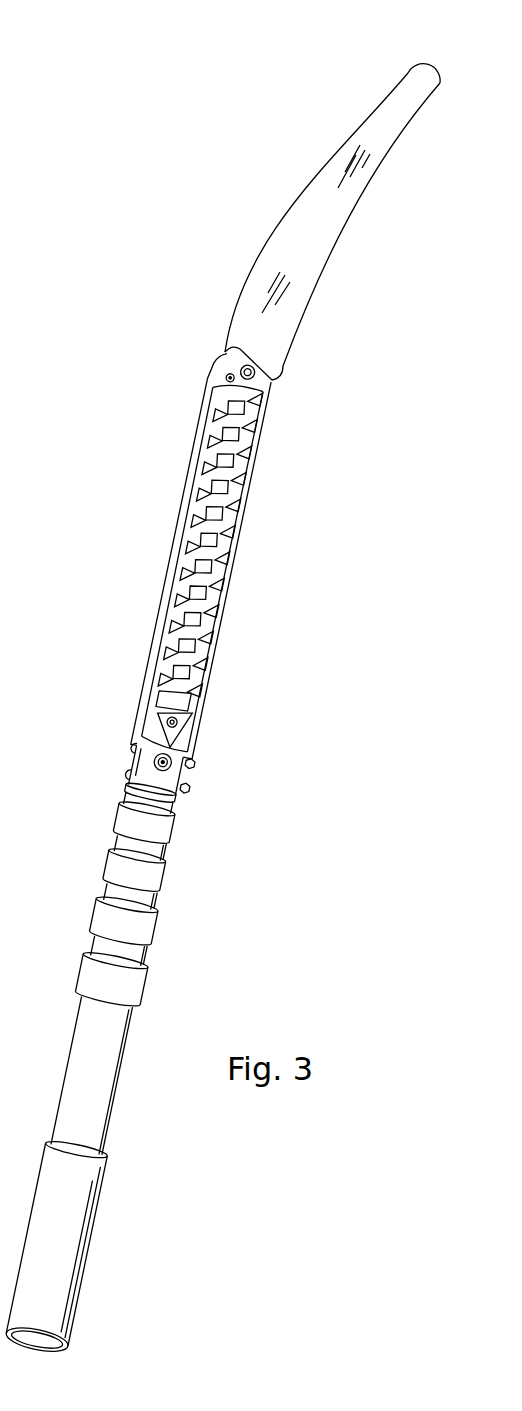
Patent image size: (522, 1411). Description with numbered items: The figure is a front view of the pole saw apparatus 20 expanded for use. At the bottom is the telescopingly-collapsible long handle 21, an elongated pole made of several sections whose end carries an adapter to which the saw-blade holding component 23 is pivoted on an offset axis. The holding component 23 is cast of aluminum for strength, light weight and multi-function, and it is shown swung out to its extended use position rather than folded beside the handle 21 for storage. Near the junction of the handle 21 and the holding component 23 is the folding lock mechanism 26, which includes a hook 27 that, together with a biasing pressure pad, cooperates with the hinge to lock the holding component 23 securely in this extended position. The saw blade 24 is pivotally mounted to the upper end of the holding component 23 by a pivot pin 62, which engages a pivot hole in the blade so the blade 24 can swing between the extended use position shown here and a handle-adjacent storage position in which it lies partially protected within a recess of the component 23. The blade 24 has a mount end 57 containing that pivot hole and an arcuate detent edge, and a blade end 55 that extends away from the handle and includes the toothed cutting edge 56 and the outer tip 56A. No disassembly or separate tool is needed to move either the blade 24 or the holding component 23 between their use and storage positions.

The pole saw apparatus 20 is at (118, 442).
The long handle 21 is at (100, 1099).
The saw-blade holding component 23 is at (167, 568).
The saw blade 24 is at (283, 214).
The folding lock mechanism 26 is at (212, 778).
The hook 27 is at (176, 738).
The blade end 55 is at (395, 105).
The cutting edge 56 is at (338, 239).
The tip 56A is at (436, 76).
The mount end 57 is at (240, 328).
The pivot pin 62 is at (268, 389).